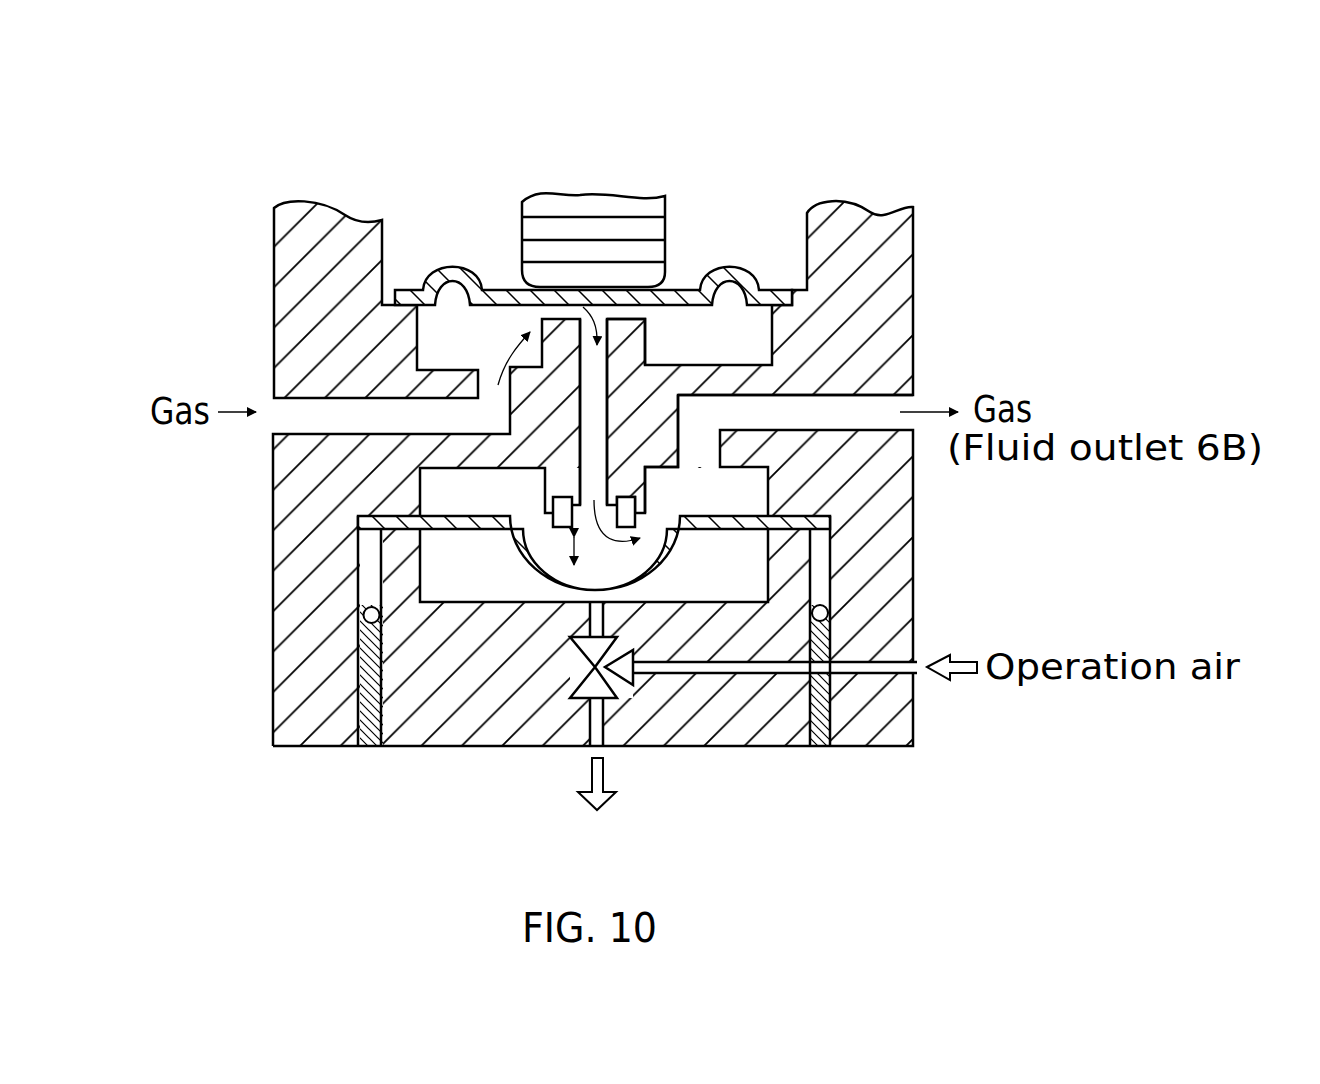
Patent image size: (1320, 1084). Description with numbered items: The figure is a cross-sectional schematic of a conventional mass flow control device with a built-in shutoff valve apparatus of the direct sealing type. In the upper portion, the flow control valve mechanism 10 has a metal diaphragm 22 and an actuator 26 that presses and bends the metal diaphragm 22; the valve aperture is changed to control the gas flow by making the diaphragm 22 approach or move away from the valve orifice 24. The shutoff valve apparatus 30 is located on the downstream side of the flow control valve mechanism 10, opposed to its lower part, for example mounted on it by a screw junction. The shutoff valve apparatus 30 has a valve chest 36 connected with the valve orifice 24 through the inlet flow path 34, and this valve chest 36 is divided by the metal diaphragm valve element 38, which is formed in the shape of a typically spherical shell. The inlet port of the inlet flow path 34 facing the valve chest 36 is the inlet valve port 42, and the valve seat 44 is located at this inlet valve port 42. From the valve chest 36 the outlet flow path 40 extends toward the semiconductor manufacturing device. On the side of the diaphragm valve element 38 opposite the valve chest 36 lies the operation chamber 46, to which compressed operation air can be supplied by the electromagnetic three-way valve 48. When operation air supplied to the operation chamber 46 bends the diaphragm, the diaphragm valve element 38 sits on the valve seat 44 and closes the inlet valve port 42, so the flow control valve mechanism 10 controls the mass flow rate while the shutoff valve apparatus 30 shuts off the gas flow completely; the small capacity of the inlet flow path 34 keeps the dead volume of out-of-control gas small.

The flow control valve mechanism 10 is at (741, 158).
The metal diaphragm 22 is at (505, 288).
The valve orifice 24 is at (683, 300).
The actuator 26 is at (591, 230).
The shutoff valve apparatus 30 is at (782, 800).
The inlet flow path 34 is at (593, 450).
The valve chest 36 is at (722, 492).
The metal diaphragm valve element 38 is at (507, 524).
The outlet flow path 40 is at (612, 447).
The inlet valve port 42 is at (612, 407).
The valve seat 44 is at (573, 528).
The operation chamber 46 is at (735, 565).
The electromagnetic three-way valve 48 is at (602, 645).